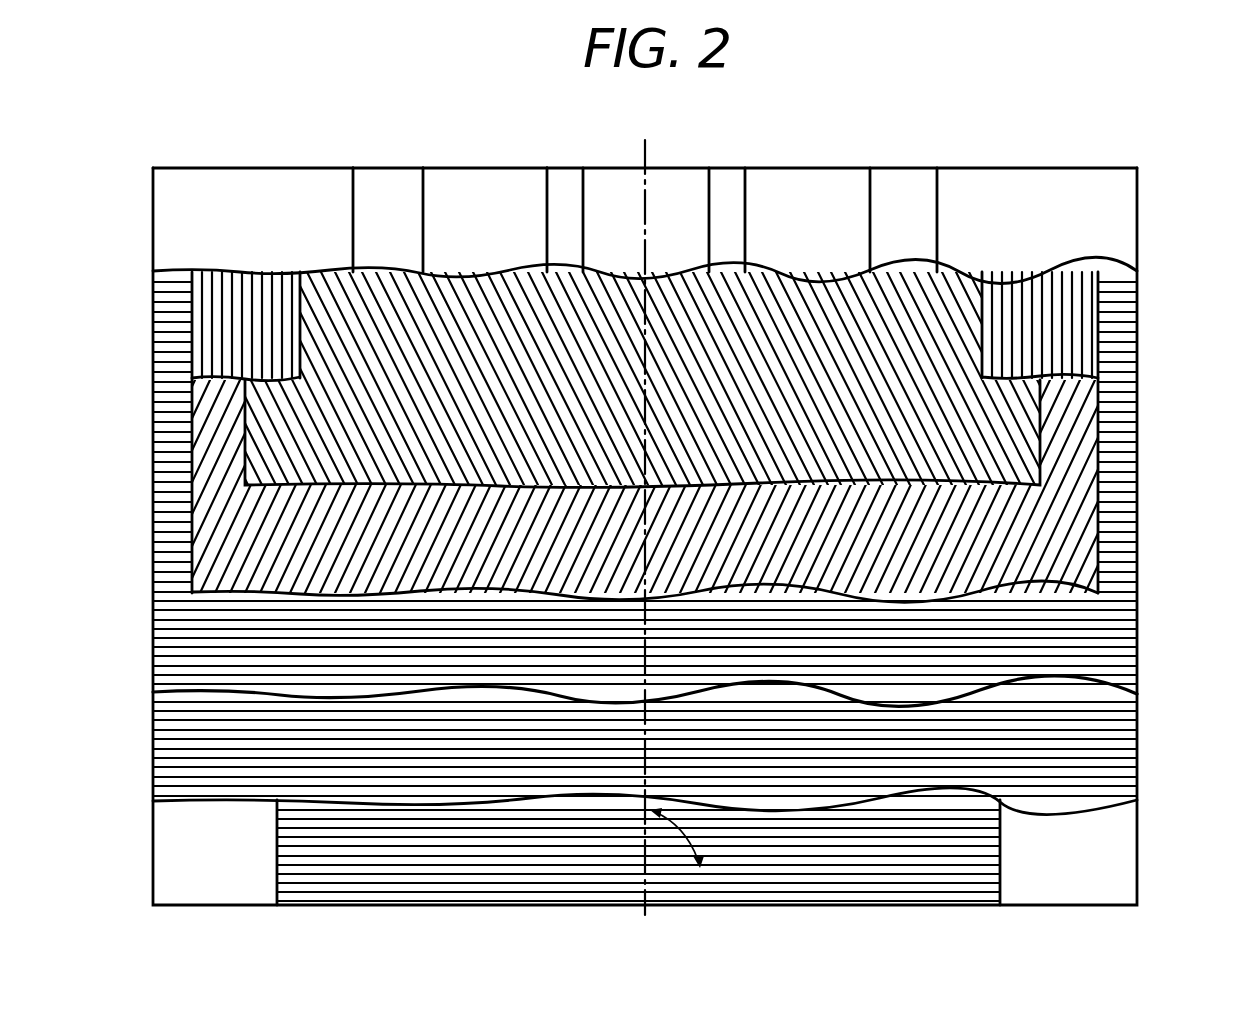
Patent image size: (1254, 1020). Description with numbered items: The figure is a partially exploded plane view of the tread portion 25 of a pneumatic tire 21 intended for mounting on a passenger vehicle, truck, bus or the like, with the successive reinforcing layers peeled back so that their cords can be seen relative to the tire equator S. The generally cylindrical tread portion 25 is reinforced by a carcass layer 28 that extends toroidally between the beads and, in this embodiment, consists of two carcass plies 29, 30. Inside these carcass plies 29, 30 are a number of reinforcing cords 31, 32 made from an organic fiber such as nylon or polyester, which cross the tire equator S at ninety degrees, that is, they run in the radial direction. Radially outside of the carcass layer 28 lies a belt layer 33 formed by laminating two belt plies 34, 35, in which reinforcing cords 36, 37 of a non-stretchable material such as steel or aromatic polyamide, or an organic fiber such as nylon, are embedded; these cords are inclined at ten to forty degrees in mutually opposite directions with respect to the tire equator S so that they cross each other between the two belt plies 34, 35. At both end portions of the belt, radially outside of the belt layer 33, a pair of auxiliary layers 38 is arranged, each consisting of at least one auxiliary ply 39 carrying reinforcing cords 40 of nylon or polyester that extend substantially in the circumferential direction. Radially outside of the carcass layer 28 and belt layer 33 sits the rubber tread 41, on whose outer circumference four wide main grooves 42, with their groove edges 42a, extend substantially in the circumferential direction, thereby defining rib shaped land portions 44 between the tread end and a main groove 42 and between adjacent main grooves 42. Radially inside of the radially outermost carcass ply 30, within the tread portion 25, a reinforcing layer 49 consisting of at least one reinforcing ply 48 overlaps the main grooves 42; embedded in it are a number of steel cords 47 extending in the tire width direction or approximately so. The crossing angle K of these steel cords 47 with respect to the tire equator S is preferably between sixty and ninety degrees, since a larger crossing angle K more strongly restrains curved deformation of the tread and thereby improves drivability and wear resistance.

The pneumatic tire 21 is at (1015, 165).
The tread portion 25 is at (823, 165).
The carcass layer 28 is at (1140, 688).
The carcass ply 29 is at (1123, 726).
The carcass ply 30 is at (1110, 606).
The reinforcing cord 31 is at (1100, 768).
The reinforcing cord 32 is at (1105, 630).
The belt layer 33 is at (1105, 424).
The belt ply 34 is at (1075, 483).
The belt ply 35 is at (805, 305).
The reinforcing cord 36 is at (1060, 552).
The reinforcing cord 37 is at (905, 300).
The auxiliary layer 38 is at (278, 274).
The auxiliary ply 39 is at (238, 300).
The reinforcing cord 40 is at (220, 300).
The tread 41 is at (626, 190).
The main groove 42 is at (400, 188).
The rail edge 42a is at (356, 190).
The land portion 44 is at (245, 190).
The steel cord 47 is at (968, 830).
The reinforcing ply 48 is at (1000, 876).
The reinforcing layer 49 is at (268, 863).
The tire equator S is at (652, 180).
The crossing angle K is at (676, 818).